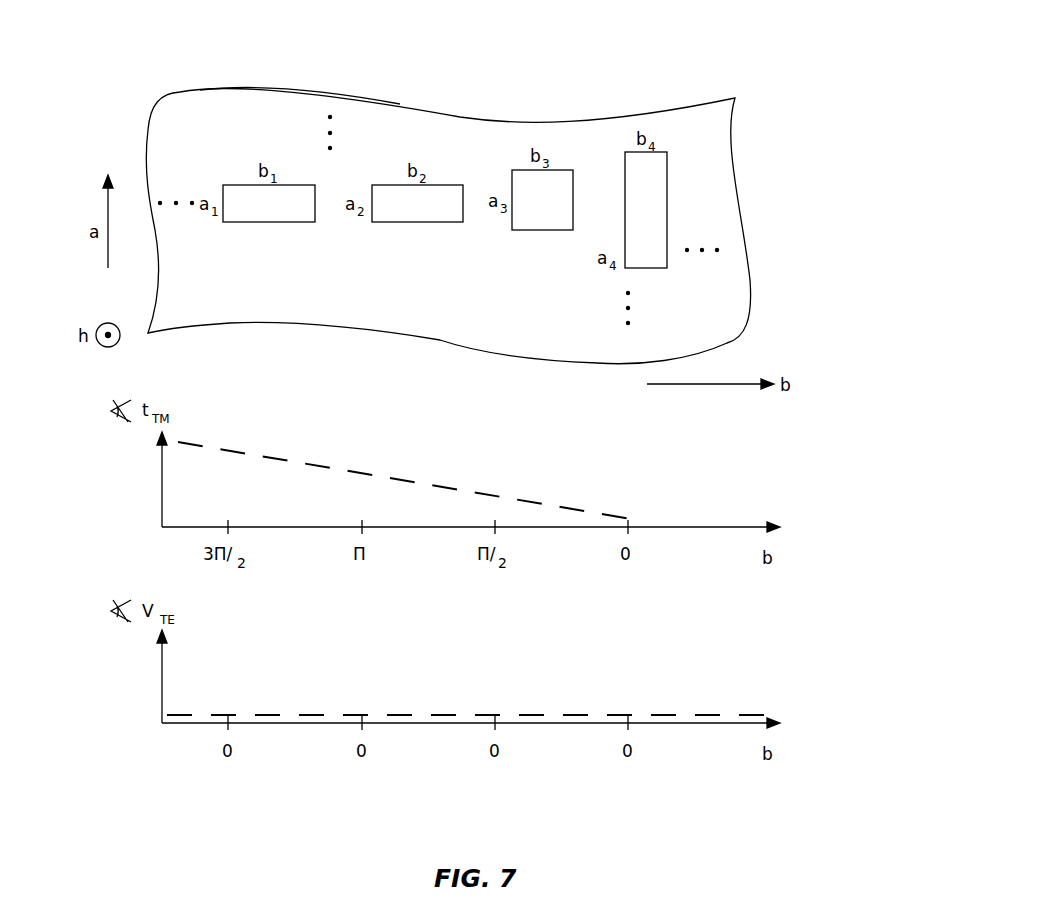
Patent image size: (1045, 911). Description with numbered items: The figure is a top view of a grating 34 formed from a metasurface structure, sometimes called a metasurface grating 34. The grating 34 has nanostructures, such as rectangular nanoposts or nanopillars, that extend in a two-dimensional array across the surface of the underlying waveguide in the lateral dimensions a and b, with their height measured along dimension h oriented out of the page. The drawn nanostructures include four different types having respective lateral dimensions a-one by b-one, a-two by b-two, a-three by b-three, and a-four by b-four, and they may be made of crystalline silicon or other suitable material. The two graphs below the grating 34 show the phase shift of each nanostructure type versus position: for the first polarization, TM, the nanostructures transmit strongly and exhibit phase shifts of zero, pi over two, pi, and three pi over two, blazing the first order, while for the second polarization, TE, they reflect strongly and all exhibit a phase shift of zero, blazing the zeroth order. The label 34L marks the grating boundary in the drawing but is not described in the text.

The grating 34 is at (448, 187).
The layer surface of element 34 34L is at (248, 100).